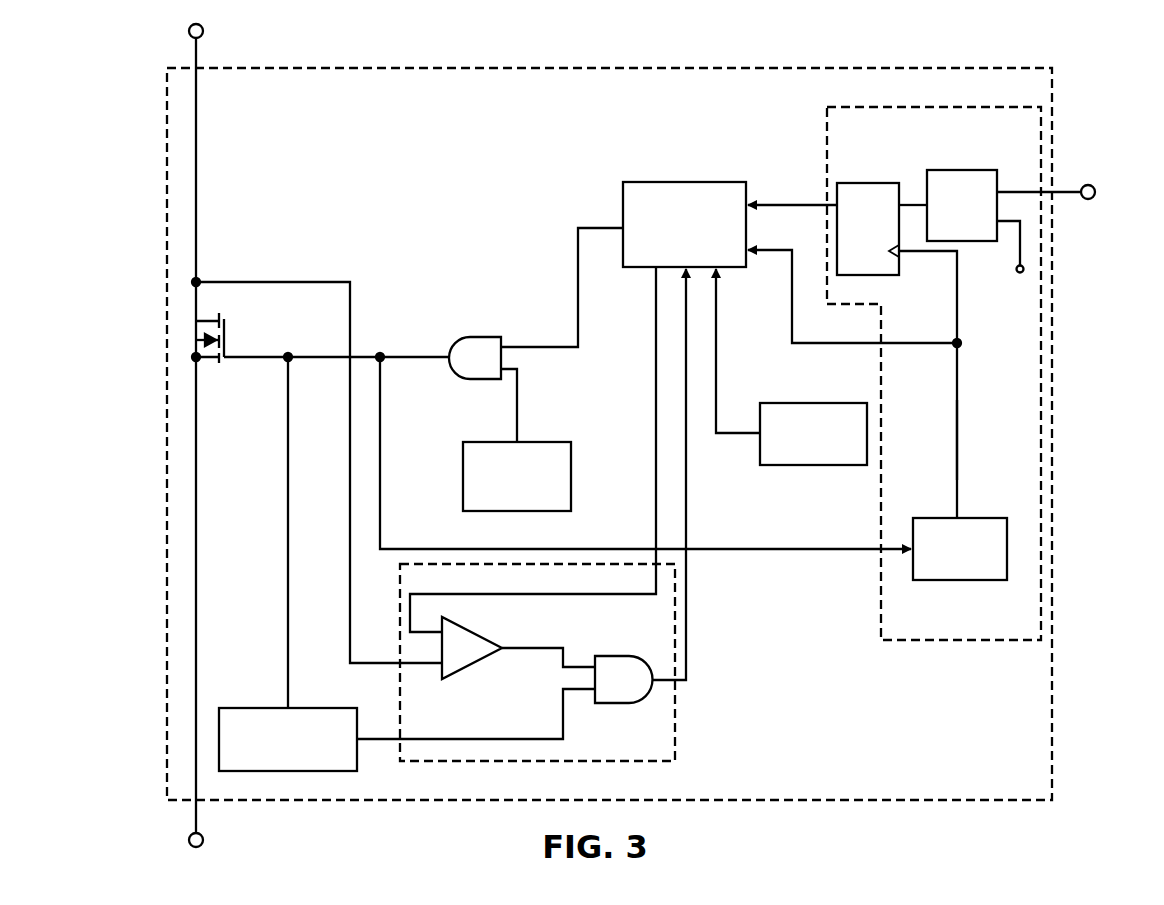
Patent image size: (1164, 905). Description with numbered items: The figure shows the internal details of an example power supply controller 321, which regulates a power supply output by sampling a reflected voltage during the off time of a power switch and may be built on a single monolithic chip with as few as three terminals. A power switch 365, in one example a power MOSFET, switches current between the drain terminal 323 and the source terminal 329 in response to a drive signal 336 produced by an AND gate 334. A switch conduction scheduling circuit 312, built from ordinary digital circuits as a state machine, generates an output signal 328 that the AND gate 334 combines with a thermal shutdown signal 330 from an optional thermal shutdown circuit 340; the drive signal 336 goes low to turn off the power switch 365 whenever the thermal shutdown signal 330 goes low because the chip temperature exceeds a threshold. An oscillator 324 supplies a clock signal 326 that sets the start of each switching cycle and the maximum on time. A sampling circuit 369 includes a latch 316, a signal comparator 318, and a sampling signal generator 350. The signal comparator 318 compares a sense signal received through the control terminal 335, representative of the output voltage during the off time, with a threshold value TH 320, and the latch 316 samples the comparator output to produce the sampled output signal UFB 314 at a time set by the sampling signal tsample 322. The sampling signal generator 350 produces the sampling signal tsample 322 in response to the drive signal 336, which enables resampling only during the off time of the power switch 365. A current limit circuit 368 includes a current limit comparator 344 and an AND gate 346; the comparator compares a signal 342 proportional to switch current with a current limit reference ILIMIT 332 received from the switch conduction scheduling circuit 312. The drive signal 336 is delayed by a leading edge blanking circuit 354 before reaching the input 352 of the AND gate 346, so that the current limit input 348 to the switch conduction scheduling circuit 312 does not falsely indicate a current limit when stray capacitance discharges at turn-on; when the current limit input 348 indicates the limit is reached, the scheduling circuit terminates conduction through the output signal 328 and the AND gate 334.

The switch conduction scheduling circuit 312 is at (676, 179).
The sampled output signal UFB 314 is at (783, 196).
The latch 316 is at (858, 179).
The signal comparator 318 is at (955, 166).
The threshold value TH 320 is at (1011, 300).
The power supply controller 321 is at (623, 64).
The sampling signal tsample 322 is at (965, 412).
The drain terminal 323 is at (207, 37).
The oscillator 324 is at (820, 397).
The clock signal 326 is at (722, 360).
The output signal 328 is at (583, 323).
The source terminal 329 is at (207, 832).
The thermal shutdown signal 330 is at (525, 380).
The current limit reference ILIMIT 332 is at (650, 419).
The AND gate 334 is at (463, 367).
The control terminal 335 is at (1077, 203).
The drive signal 336 is at (401, 342).
The thermal shutdown circuit 340 is at (470, 435).
The signal 342 is at (362, 659).
The current limit comparator 344 is at (488, 629).
The AND gate 346 is at (608, 689).
The current limit input 348 is at (690, 575).
The sampling signal generator 350 is at (958, 585).
The input 352 is at (572, 728).
The leading edge blanking circuit 354 is at (262, 704).
The power switch 365 is at (230, 318).
The current limit circuit 368 is at (680, 722).
The sampling circuit 369 is at (870, 607).